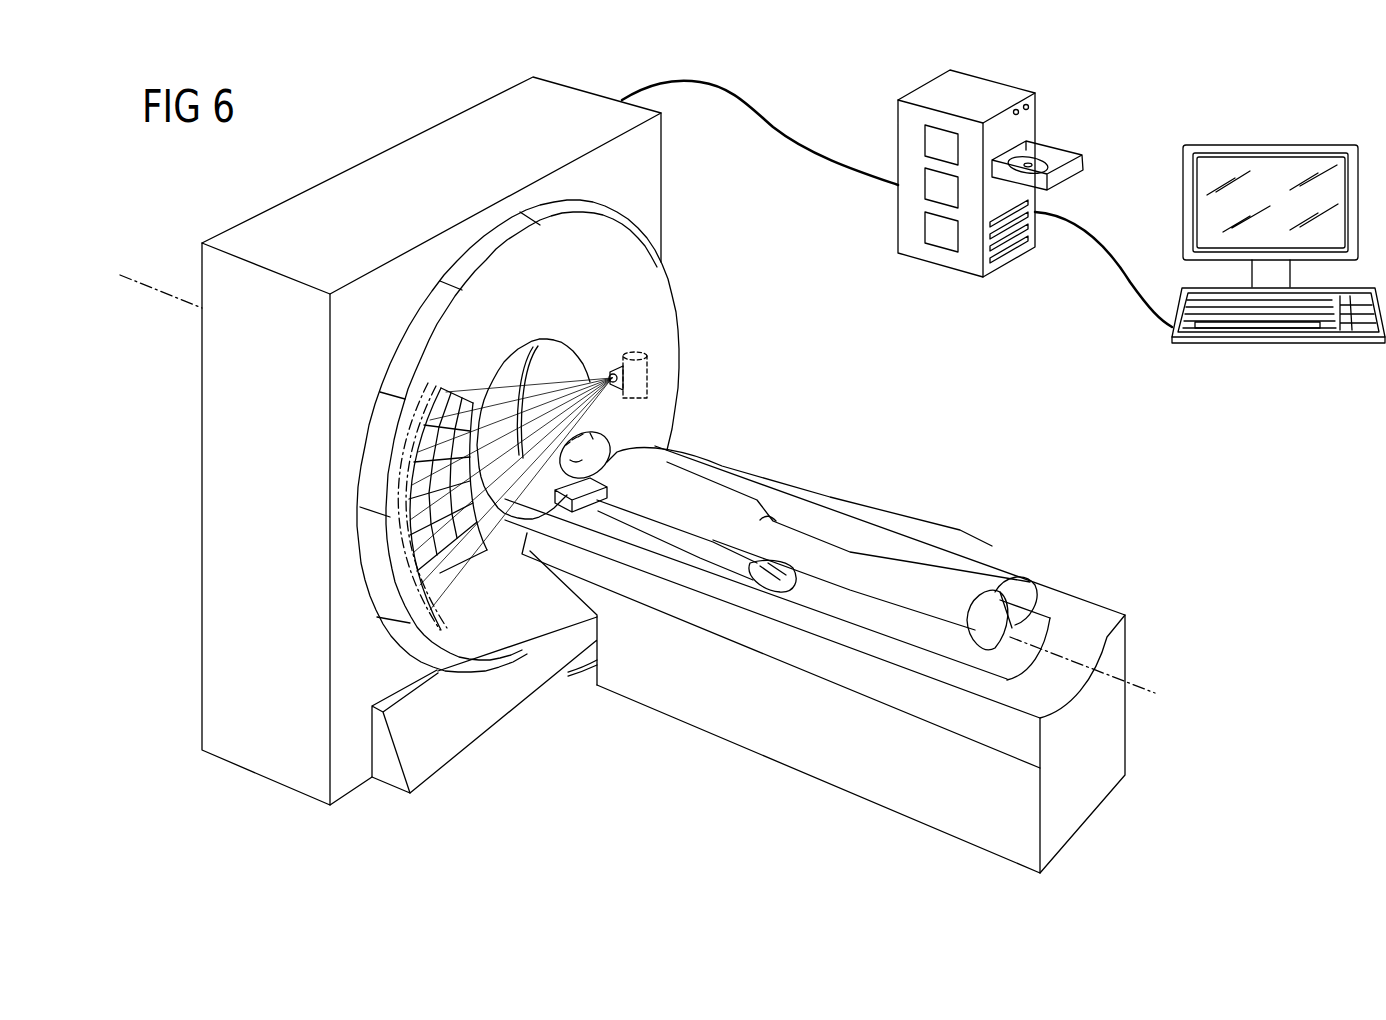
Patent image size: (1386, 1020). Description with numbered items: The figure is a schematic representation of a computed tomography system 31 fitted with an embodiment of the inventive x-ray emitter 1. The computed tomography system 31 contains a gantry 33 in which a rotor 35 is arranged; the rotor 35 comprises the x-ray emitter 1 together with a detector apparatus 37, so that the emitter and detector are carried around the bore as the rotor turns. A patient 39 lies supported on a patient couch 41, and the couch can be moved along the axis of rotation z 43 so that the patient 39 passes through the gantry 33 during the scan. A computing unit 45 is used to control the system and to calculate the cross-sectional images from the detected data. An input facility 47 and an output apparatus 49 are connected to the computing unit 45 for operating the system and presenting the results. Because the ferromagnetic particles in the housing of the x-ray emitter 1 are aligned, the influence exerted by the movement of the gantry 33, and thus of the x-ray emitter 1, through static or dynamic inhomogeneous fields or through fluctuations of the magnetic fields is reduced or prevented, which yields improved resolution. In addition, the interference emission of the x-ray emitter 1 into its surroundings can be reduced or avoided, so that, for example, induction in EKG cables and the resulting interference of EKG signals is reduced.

The x-ray emitter 1 is at (643, 378).
The computed tomography system 31 is at (193, 502).
The gantry 33 is at (375, 150).
The rotor 35 is at (662, 305).
The detector apparatus 37 is at (447, 600).
The patient 39 is at (715, 490).
The patient couch 41 is at (840, 775).
The axis of rotation z 43 is at (121, 272).
The computing unit 45 is at (1007, 92).
The input facility 47 is at (1273, 338).
The output apparatus 49 is at (1273, 150).